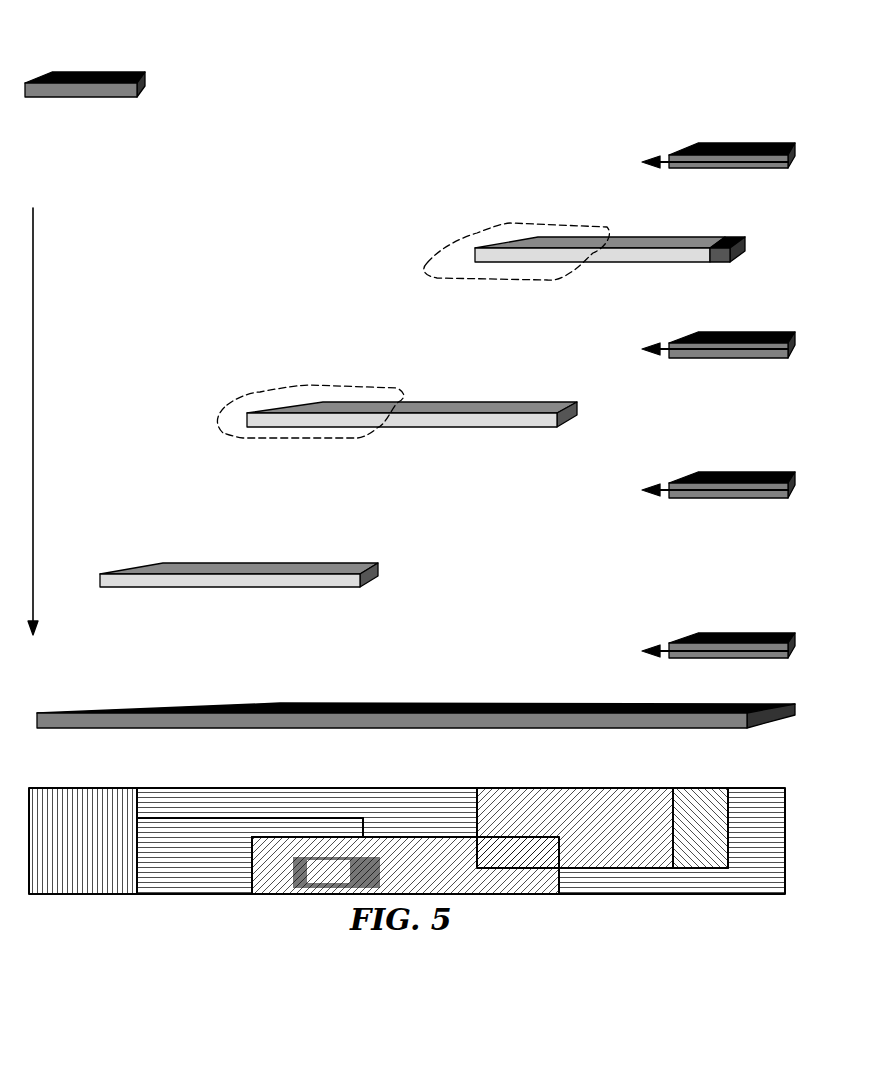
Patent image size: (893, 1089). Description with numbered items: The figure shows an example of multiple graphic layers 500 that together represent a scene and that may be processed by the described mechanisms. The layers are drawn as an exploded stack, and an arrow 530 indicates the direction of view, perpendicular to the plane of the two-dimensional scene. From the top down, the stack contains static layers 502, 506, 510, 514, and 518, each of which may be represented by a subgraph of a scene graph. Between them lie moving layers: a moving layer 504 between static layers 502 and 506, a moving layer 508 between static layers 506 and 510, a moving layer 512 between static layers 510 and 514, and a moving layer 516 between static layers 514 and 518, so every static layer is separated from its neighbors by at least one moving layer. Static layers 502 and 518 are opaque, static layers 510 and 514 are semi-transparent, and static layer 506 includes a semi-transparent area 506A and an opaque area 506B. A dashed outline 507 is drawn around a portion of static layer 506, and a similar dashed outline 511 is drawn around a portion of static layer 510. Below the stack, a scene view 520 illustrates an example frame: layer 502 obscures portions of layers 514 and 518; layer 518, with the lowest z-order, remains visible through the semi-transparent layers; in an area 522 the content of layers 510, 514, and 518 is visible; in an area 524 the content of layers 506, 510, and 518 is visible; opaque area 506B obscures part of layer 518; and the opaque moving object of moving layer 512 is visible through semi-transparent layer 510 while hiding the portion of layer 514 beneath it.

The multiple graphic layers 500 is at (305, 21).
The static layer 502 is at (117, 97).
The moving layer 504 is at (737, 145).
The static layer 506 is at (635, 526).
The semi-transparent area 506A is at (690, 240).
The opaque area 506B is at (722, 240).
The overlap region of second layer 507 is at (512, 223).
The moving layer 508 is at (755, 330).
The static layer 510 is at (475, 405).
The overlap region of third layer 511 is at (305, 385).
The moving layer 512 is at (722, 472).
The static layer 514 is at (278, 575).
The moving layer 516 is at (735, 633).
The static layer 518 is at (72, 713).
The scene view 520 is at (193, 788).
The area 522 is at (270, 857).
The area 524 is at (545, 857).
The arrow 530 is at (33, 335).